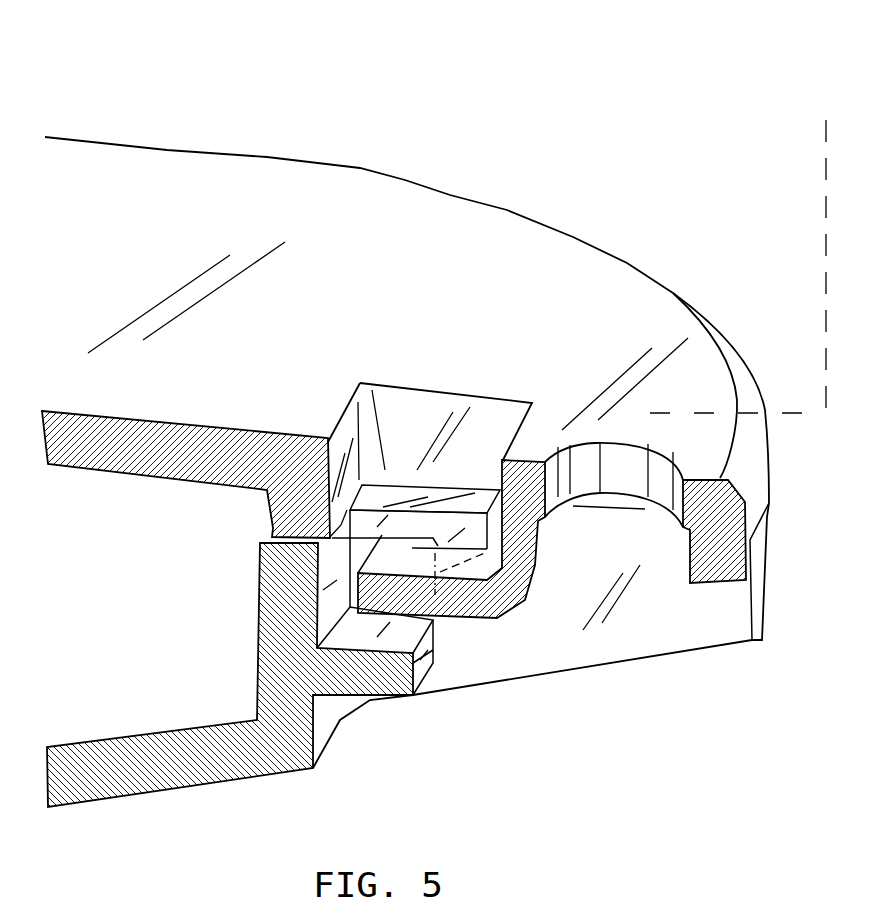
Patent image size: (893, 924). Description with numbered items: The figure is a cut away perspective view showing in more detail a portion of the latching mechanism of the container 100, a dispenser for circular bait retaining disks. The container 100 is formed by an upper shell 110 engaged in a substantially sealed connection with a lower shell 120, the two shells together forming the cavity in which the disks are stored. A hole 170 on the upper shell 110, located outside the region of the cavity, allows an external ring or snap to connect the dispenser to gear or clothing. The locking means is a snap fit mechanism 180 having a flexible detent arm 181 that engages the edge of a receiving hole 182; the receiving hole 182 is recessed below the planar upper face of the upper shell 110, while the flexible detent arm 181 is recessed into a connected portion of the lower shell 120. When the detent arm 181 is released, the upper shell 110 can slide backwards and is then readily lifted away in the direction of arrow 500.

The container 100 is at (688, 116).
The upper shell 110 is at (281, 149).
The lower shell 120 is at (176, 812).
The hole 170 is at (588, 460).
The snap fit mechanism 180 is at (396, 408).
The flexible detent arm 181 is at (462, 496).
The receiving hole 182 is at (413, 548).
The arrow 500 is at (825, 108).